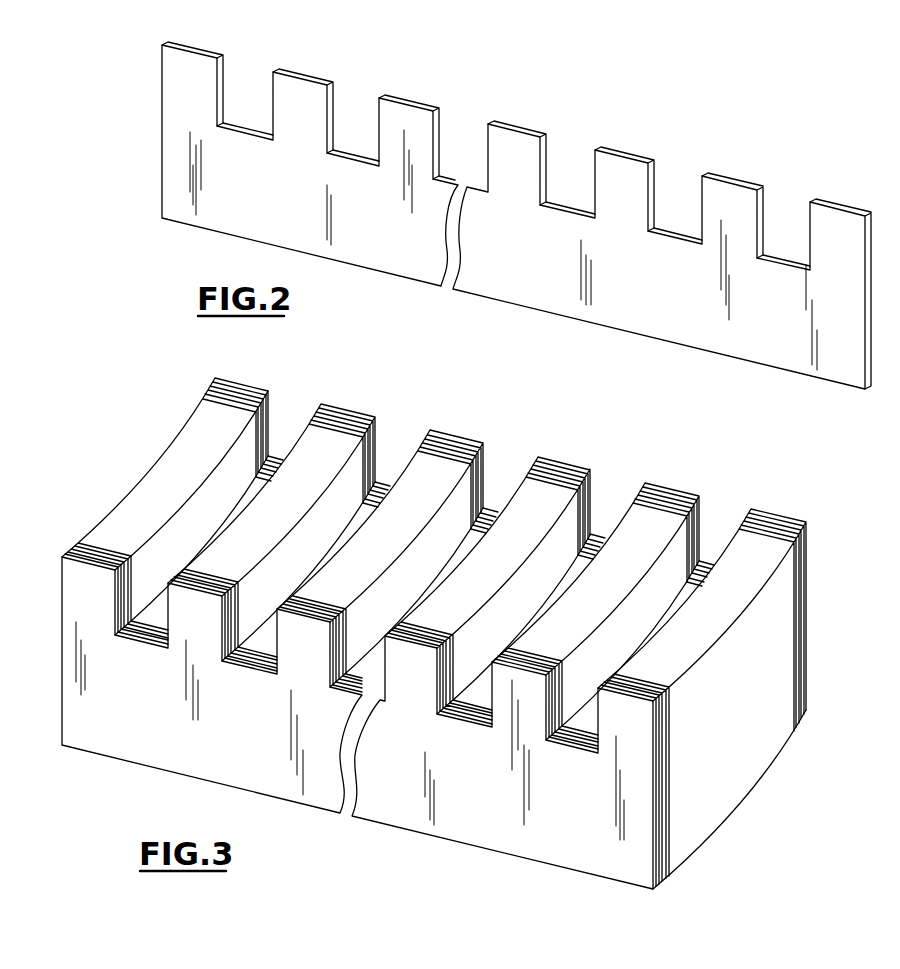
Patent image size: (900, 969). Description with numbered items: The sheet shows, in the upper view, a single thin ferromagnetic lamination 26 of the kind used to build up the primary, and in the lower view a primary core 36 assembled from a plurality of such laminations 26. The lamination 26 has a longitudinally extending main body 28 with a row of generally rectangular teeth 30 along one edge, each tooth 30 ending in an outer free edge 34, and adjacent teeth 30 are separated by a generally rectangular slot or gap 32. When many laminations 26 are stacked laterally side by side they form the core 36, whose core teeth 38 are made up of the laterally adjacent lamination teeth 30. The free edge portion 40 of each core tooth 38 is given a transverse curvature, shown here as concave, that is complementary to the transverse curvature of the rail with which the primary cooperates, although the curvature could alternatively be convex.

In FIG. 2, the lamination 26 is at (152, 178).
In FIG. 2, the main body 28 is at (530, 287).
In FIG. 2, the teeth 30 is at (193, 62).
In FIG. 3, the teeth 30 is at (270, 403).
In FIG. 2, the slot 32 is at (567, 160).
In FIG. 2, the outer free edge 34 is at (410, 102).
In FIG. 3, the core 36 is at (437, 619).
In FIG. 3, the core teeth 38 is at (470, 420).
In FIG. 3, the free edge portion 40 is at (180, 457).